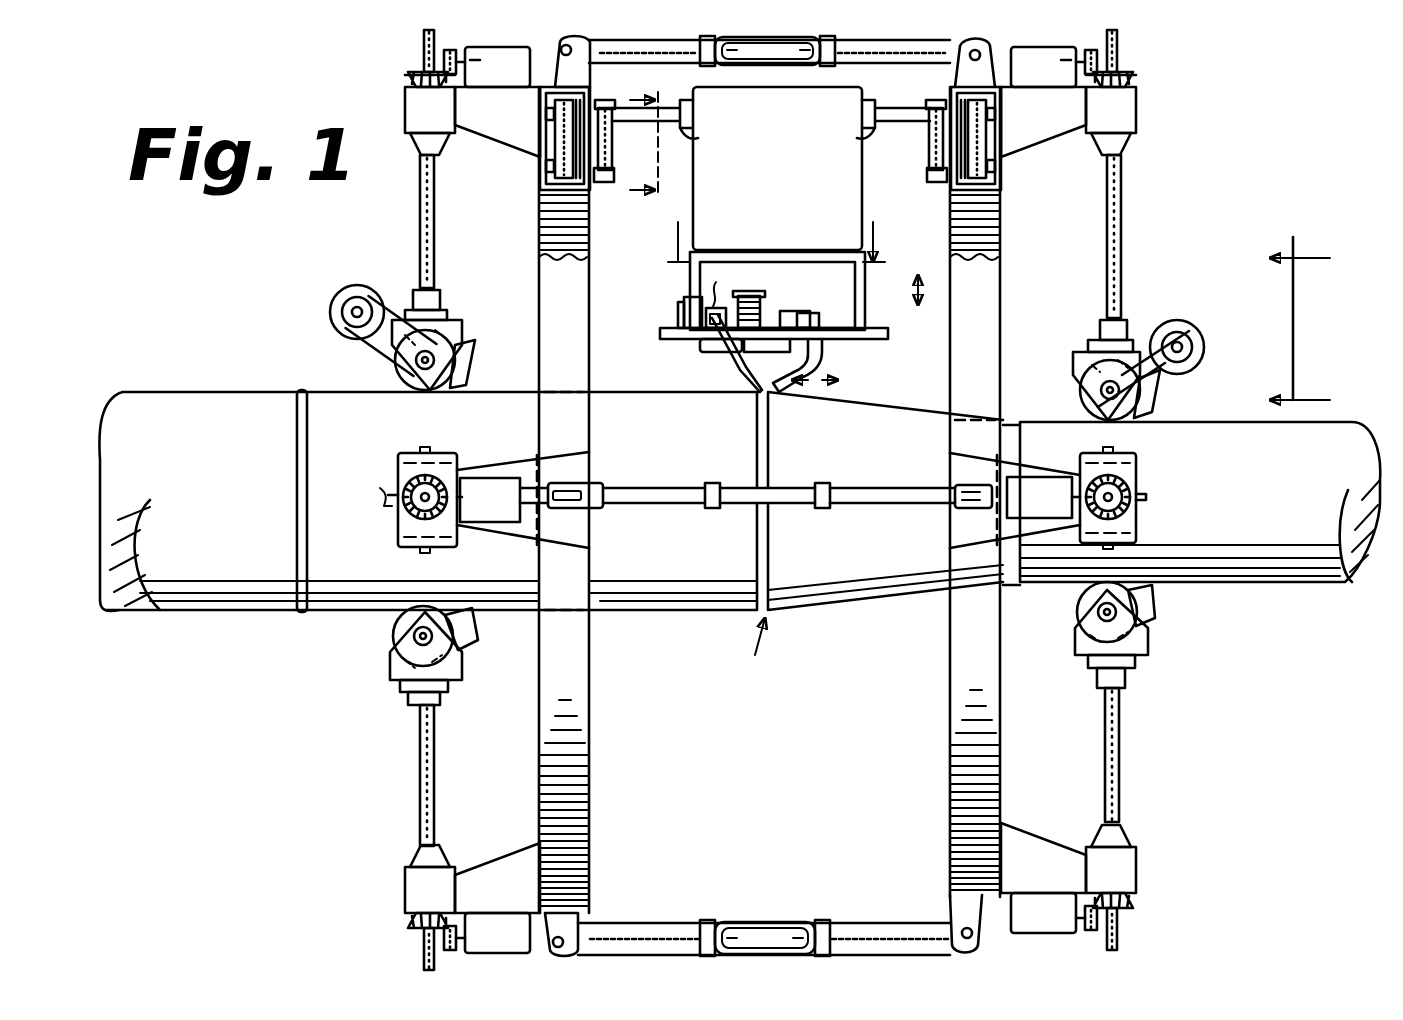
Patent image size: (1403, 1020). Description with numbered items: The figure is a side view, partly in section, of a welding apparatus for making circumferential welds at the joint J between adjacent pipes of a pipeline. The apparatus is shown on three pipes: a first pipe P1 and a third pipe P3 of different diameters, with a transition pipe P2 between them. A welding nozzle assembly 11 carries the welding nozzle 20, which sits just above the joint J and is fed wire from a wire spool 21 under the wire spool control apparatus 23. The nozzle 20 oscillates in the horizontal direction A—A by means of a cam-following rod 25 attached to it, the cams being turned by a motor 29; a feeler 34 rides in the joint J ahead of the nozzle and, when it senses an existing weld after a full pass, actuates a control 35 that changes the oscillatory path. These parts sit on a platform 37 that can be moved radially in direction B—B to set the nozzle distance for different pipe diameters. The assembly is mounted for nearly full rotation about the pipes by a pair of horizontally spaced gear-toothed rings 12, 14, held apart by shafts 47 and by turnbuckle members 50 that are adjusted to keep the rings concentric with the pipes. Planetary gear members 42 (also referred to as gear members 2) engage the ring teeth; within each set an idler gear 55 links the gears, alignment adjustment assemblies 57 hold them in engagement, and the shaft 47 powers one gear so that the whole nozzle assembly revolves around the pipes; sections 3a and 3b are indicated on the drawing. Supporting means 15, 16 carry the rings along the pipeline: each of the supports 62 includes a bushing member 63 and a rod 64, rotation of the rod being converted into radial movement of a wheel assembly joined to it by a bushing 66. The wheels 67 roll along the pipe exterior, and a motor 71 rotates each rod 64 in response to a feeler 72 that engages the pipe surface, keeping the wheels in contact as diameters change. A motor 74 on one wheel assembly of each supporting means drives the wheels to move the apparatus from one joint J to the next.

The welding nozzle assembly 11 is at (658, 348).
The ring 12 is at (600, 715).
The ring 14 is at (940, 708).
The supporting means 15 is at (390, 70).
The supporting means 16 is at (1150, 78).
The welding nozzle 20 is at (818, 373).
The wire spool 21 is at (765, 300).
The wire spool control apparatus 23 is at (812, 314).
The cam-following rod 25 is at (712, 352).
The motor 29 is at (683, 312).
The feeler 34 is at (740, 372).
The control 35 is at (727, 299).
The platform 37 is at (880, 340).
The gear members 42 is at (588, 185).
The shaft 47 is at (697, 126).
The turnbuckle member 50 is at (700, 66).
The idler gear 55 is at (1000, 130).
The alignment adjustment assembly 57 is at (617, 140).
The support 62 is at (505, 130).
The bushing member 63 is at (402, 108).
The rod 64 is at (418, 232).
The bushing 66 is at (442, 296).
The wheels 67 is at (398, 362).
The motor 71 is at (1058, 84).
The feeler 72 is at (466, 370).
The motor 74 is at (338, 300).
The pipe P1 is at (303, 612).
The transition pipe P2 is at (838, 588).
The pipe P3 is at (1298, 578).
The gear members 2 is at (1314, 326).
The section 3a is at (781, 232).
The section 3b is at (640, 146).
The direction A- A is at (816, 386).
The direction B- B is at (927, 293).
The joint J is at (753, 653).